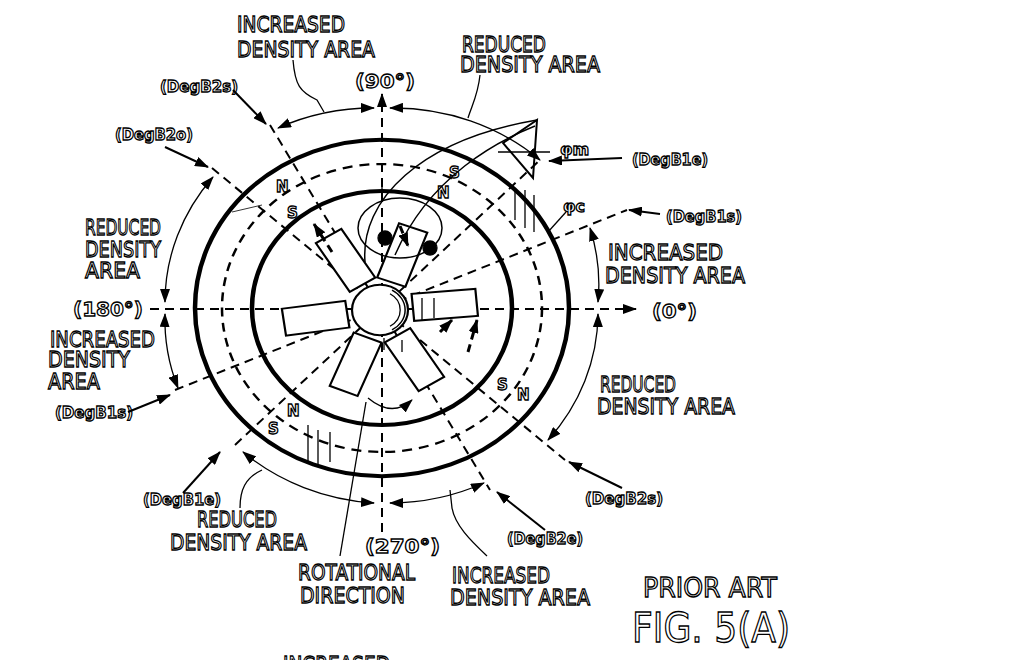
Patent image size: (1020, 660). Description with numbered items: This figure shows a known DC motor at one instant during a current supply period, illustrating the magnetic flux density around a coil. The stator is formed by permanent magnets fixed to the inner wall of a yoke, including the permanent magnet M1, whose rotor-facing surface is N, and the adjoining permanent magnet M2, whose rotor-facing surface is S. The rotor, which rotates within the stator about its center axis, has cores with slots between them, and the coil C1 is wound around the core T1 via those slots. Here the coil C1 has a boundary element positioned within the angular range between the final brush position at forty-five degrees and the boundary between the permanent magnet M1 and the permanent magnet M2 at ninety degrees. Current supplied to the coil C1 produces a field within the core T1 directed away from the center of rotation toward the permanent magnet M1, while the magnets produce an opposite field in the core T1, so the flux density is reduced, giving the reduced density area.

The permanent magnet M1 is at (557, 262).
The permanent magnet M2 is at (232, 212).
The coil C1 is at (461, 178).
The core T1 is at (395, 200).